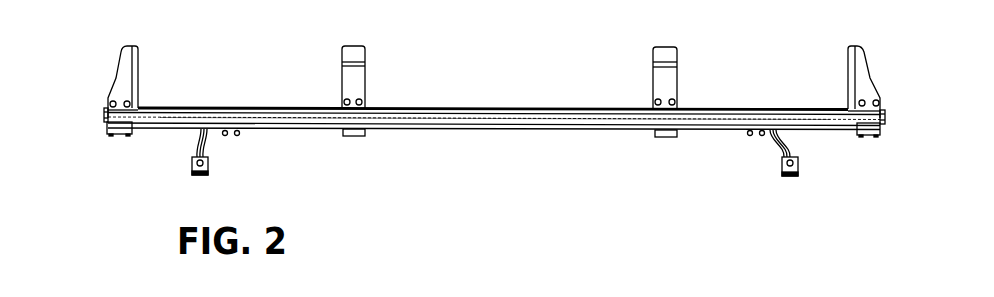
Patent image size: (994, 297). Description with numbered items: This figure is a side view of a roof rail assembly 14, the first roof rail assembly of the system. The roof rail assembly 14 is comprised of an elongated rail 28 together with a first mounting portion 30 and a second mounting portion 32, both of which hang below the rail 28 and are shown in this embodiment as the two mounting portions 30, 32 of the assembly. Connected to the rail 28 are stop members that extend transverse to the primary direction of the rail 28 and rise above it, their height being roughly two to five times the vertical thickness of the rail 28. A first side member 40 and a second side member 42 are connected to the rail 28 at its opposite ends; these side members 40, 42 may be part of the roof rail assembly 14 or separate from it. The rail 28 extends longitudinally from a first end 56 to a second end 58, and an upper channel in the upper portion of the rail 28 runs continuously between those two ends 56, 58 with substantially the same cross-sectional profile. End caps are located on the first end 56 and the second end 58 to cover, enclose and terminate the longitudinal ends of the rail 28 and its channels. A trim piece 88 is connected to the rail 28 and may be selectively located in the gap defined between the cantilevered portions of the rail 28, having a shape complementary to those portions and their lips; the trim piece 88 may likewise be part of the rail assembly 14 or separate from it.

The roof rail assembly 14 is at (445, 98).
The rail 28 is at (560, 108).
The first mounting portion 30 is at (196, 150).
The second mounting portion 32 is at (776, 150).
The first side member 40 is at (118, 60).
The second side member 42 is at (866, 81).
The first end 56 is at (106, 133).
The second end 58 is at (880, 135).
The trim piece 88 is at (247, 108).